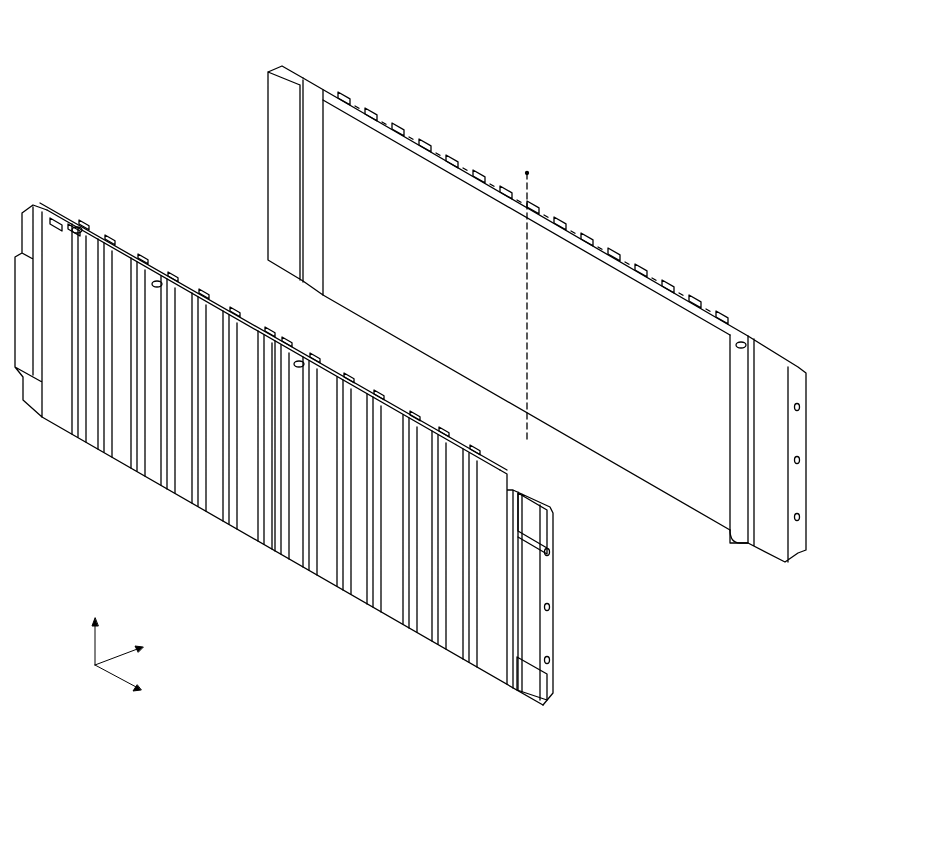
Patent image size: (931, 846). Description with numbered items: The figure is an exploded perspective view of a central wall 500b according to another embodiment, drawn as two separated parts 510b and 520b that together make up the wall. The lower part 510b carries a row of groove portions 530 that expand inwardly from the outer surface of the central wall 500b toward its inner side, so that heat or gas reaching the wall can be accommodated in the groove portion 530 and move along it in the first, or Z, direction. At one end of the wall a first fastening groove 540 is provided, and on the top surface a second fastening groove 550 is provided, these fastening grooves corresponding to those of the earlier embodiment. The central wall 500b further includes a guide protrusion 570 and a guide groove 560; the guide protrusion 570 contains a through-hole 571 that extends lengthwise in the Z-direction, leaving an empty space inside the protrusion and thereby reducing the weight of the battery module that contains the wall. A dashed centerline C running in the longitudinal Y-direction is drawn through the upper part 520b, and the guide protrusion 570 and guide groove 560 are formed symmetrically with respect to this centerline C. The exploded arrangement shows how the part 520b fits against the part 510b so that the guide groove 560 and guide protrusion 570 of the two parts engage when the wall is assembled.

The central wall 500b is at (208, 43).
The heat sink body 510b is at (50, 213).
The cover plate 520b is at (273, 118).
The groove portion 530 is at (377, 597).
The first fastening groove 540 is at (547, 607).
The second fastening groove 550 is at (302, 357).
The guide groove 560 is at (515, 491).
The guide protrusion 570 is at (85, 230).
The through-hole 571 is at (75, 227).
The centerline C is at (527, 173).